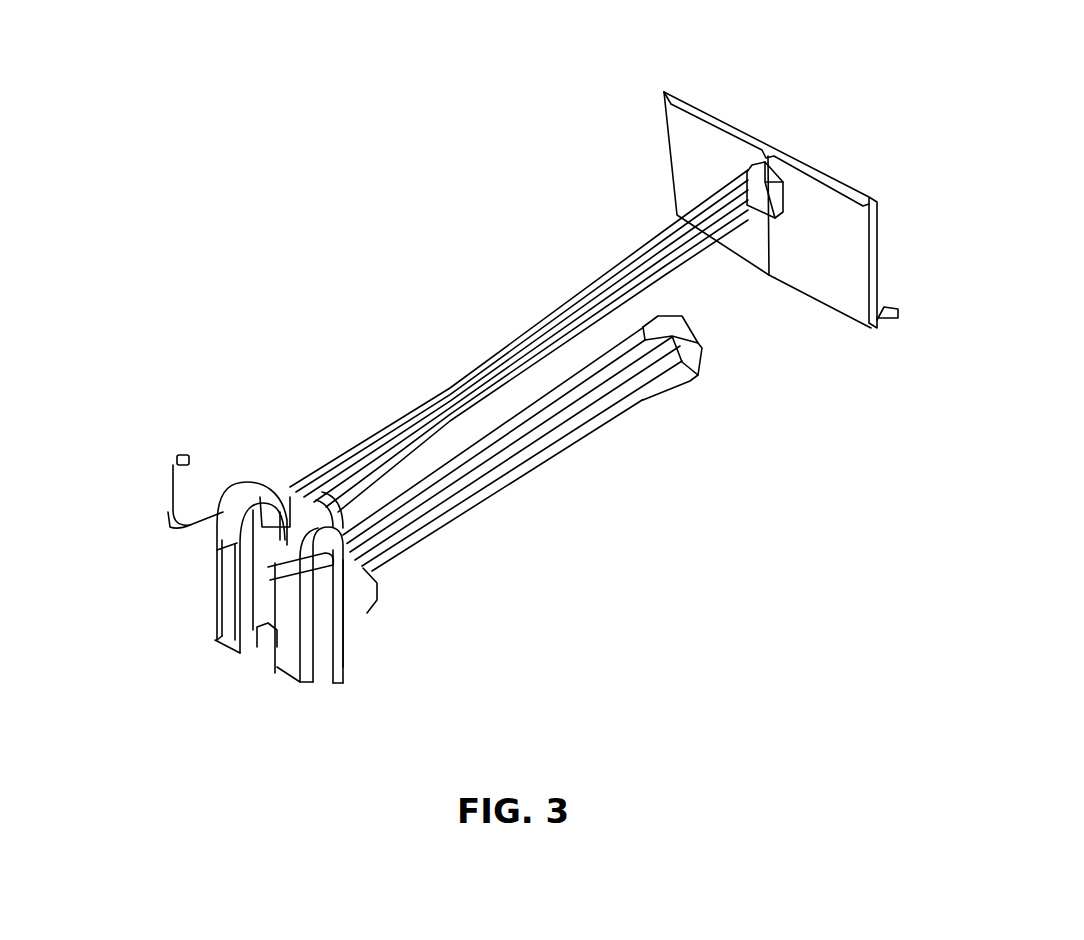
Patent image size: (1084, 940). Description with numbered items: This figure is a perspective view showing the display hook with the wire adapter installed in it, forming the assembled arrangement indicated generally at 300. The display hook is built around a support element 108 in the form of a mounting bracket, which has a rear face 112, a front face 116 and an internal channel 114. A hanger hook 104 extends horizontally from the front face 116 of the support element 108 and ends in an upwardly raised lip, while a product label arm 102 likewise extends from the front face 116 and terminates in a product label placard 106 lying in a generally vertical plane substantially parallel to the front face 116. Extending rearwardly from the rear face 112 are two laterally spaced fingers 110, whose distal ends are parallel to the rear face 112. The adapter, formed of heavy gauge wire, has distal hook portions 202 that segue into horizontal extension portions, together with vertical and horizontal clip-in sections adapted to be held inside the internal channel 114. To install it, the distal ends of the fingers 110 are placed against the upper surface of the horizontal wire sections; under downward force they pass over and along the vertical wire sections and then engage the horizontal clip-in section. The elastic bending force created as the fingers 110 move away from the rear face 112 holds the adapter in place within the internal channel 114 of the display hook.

The merchandise display hook assembly 300 is at (393, 272).
The product label arm 102 is at (507, 360).
The hanger hook 104 is at (625, 390).
The product label placard 106 is at (712, 112).
The support element 108 is at (262, 487).
The fingers 110 is at (230, 587).
The rear face 112 is at (342, 684).
The internal channel 114 is at (372, 577).
The front face 116 is at (355, 637).
The distal hook portions 202 is at (180, 457).